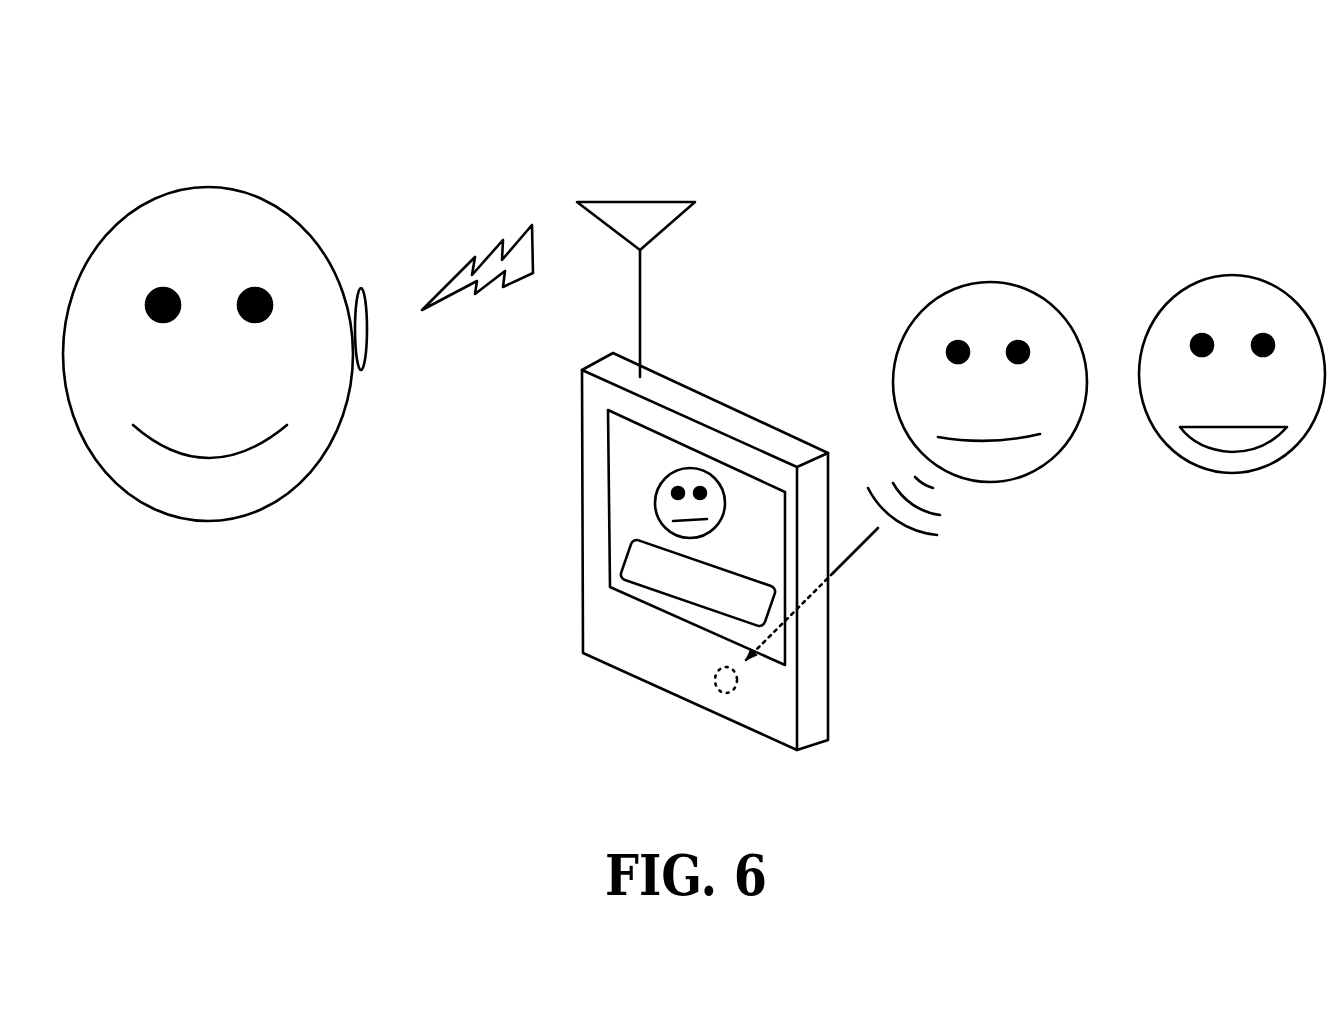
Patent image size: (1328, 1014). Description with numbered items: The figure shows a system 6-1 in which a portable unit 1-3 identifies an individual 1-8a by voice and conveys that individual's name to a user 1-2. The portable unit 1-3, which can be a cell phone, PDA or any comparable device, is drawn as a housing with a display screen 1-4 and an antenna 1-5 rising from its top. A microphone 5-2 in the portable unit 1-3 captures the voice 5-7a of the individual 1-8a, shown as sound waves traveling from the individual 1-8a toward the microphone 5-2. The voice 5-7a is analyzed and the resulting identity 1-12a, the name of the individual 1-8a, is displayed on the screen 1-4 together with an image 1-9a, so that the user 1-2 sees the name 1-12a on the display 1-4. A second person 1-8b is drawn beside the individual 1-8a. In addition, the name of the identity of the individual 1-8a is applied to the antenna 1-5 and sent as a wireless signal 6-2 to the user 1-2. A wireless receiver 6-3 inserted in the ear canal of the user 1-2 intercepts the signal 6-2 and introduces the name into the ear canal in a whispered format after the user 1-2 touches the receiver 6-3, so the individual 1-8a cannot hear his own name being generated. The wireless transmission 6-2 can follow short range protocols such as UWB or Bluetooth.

The system 6-1 is at (388, 137).
The user 1-2 is at (208, 526).
The wireless receiver 6-3 is at (366, 375).
The wireless signal 6-2 is at (458, 300).
The antenna 1-5 is at (645, 295).
The portable unit 1-3 is at (834, 730).
The display screen 1-4 is at (627, 602).
The image 1-9a is at (648, 503).
The identity 1-12a is at (630, 551).
The microphone 5-2 is at (708, 683).
The voice 5-7a is at (948, 518).
The individual 1-8a is at (1037, 296).
The second speaker 1-8b is at (1227, 478).